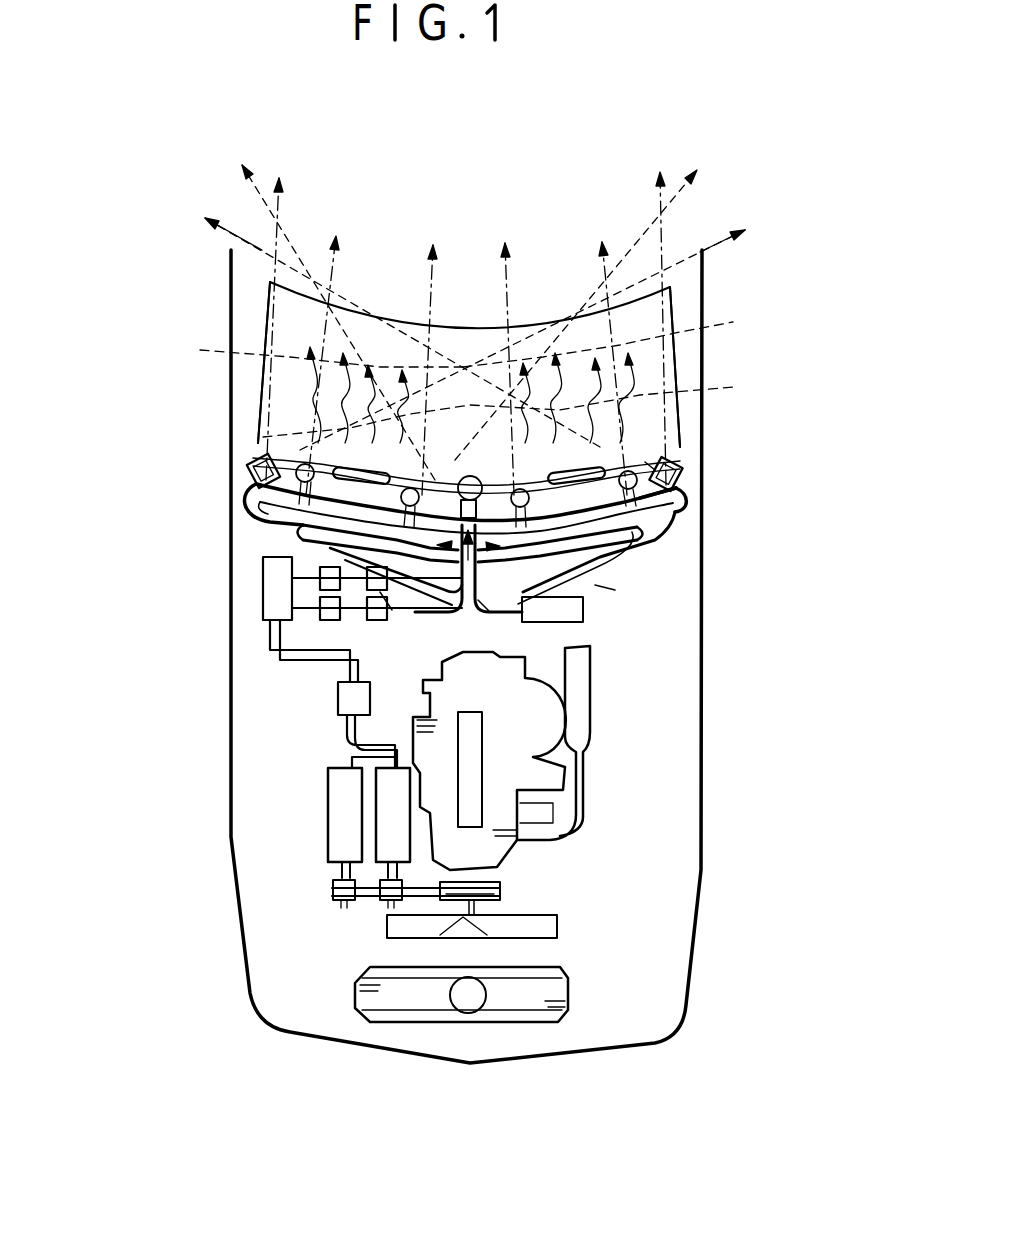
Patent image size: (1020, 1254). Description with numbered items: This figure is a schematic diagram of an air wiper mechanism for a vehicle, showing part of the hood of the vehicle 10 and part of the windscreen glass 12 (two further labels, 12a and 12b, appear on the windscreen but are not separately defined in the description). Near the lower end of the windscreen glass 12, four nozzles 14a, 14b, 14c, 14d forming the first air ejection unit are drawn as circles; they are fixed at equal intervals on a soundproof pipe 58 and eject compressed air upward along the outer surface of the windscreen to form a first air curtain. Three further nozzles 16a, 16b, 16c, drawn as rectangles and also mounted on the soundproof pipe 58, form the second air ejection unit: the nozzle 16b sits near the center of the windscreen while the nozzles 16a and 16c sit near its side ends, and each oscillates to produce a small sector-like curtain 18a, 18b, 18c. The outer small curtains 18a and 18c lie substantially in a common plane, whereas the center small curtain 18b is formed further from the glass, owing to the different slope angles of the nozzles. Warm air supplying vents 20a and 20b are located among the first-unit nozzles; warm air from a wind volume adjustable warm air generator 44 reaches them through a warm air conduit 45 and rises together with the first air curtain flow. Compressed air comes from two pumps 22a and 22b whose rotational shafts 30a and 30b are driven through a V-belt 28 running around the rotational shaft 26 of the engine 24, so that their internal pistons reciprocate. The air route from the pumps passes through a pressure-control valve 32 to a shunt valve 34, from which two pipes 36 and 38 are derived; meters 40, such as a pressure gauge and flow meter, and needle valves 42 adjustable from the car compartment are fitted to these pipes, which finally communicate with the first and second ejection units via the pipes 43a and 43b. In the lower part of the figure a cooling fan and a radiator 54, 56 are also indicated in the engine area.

The vehicle 10 is at (706, 702).
The windscreen glass 12 is at (673, 292).
The lens left edge 12a is at (265, 335).
The lens right edge 12b is at (673, 367).
The nozzle 14a is at (258, 497).
The nozzle 14b is at (395, 470).
The nozzle 14c is at (565, 545).
The nozzle 14d is at (680, 500).
The nozzle 16a is at (255, 470).
The nozzle 16b is at (458, 480).
The nozzle 16c is at (683, 473).
The small curtain 18a is at (307, 353).
The small curtain 18b is at (523, 404).
The small curtain 18c is at (620, 332).
The warm air supplying vent 20a is at (283, 547).
The warm air supplying vent 20b is at (647, 537).
The pump 22a is at (333, 807).
The pump 22b is at (393, 838).
The engine 24 is at (510, 807).
The rotational shaft 26 is at (480, 907).
The V-belt 28 is at (420, 893).
The rotational shaft 30a is at (337, 907).
The rotational shaft 30b is at (390, 902).
The pressure-control valve 32 is at (337, 700).
The shunt valve 34 is at (267, 595).
The pipe 36 is at (263, 567).
The pipe 38 is at (318, 655).
The meters 40 is at (300, 603).
The needle valves 42 is at (370, 683).
The pipe 43a is at (392, 597).
The pipe 43b is at (478, 605).
The warm air generator 44 is at (590, 610).
The warm air conduit 45 is at (620, 590).
The shaft 54 is at (430, 892).
The cooling fan 56 is at (530, 1003).
The support 58 is at (655, 457).